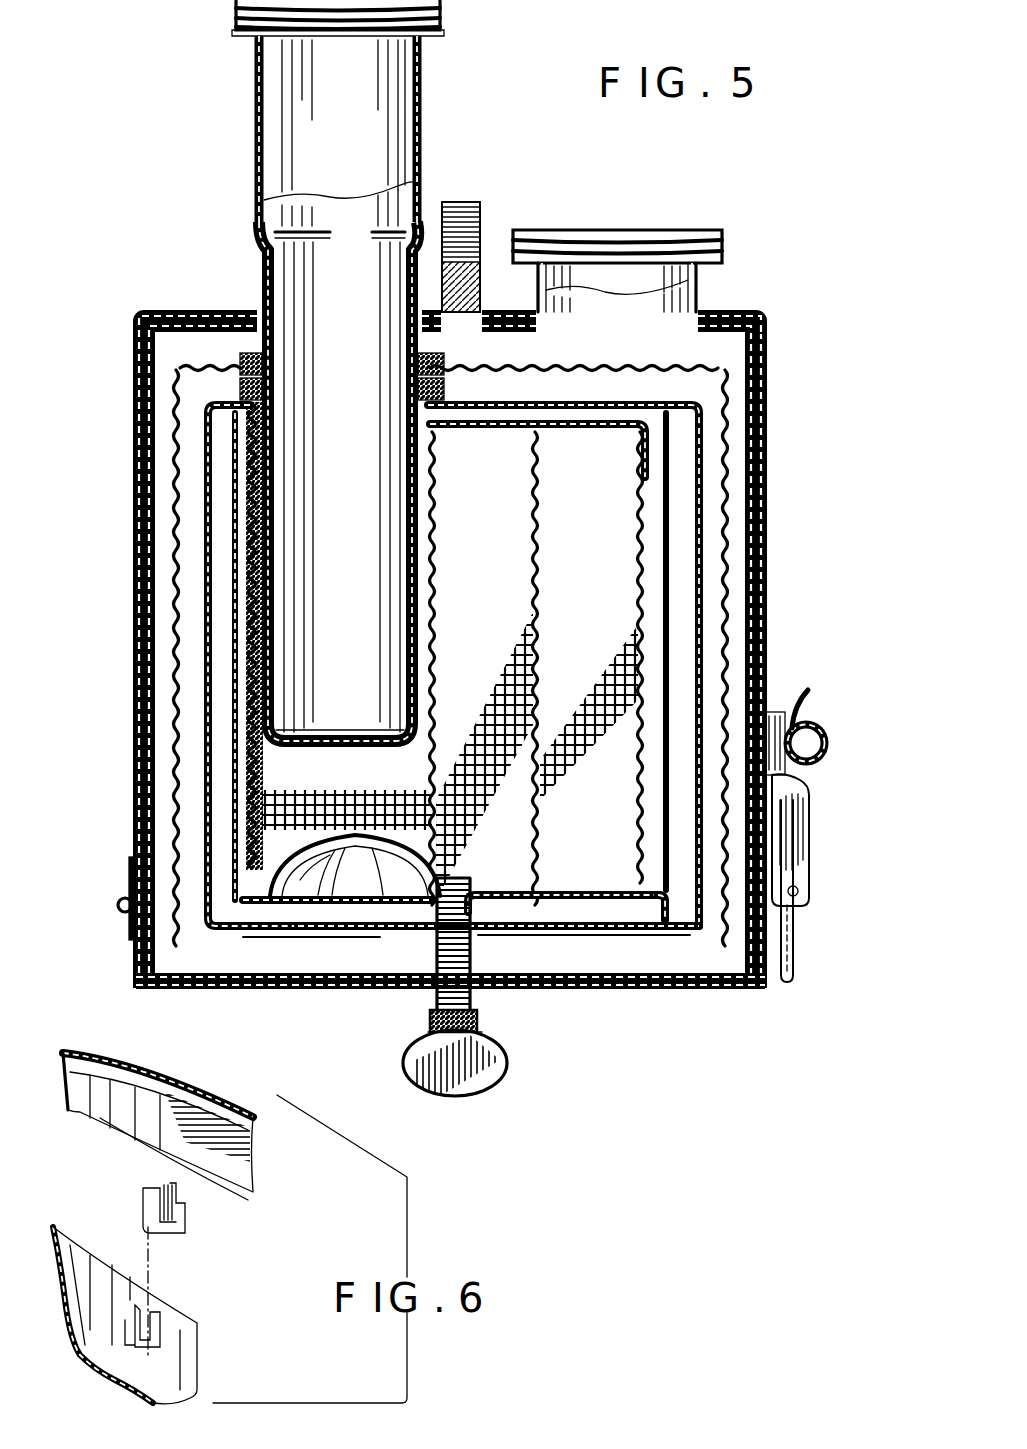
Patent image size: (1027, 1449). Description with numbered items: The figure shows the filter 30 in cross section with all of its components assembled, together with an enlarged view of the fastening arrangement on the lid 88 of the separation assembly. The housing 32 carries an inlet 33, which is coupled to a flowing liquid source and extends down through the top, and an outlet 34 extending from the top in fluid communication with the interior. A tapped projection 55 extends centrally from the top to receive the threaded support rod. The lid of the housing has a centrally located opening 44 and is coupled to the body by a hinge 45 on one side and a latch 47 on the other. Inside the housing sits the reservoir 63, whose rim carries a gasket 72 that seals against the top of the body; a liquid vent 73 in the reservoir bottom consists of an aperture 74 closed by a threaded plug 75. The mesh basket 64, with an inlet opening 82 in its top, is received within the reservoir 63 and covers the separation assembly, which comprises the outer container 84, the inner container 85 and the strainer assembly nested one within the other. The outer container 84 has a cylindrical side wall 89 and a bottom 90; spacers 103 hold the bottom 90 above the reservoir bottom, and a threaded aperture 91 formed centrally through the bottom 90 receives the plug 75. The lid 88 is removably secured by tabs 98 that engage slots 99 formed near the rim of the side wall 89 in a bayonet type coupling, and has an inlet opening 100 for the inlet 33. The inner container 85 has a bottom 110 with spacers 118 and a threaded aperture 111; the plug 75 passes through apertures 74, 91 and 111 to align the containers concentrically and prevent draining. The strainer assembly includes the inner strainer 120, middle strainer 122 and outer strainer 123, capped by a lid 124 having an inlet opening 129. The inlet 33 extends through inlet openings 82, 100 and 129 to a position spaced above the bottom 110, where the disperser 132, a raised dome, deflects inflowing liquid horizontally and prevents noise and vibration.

In FIG. 5, the filter 30 is at (818, 357).
In FIG. 5, the housing 32 is at (767, 598).
In FIG. 5, the inlet 33 is at (263, 262).
In FIG. 5, the outlet 34 is at (704, 270).
In FIG. 5, the opening 44 is at (402, 990).
In FIG. 5, the hinge 45 is at (118, 905).
In FIG. 5, the latch 47 is at (816, 842).
In FIG. 5, the projection 55 is at (481, 232).
In FIG. 5, the reservoir 63 is at (737, 395).
In FIG. 5, the basket 64 is at (492, 362).
In FIG. 5, the gasket 72 is at (740, 335).
In FIG. 5, the liquid vent 73 is at (428, 1036).
In FIG. 5, the aperture 74 is at (481, 1011).
In FIG. 5, the plug 75 is at (516, 1055).
In FIG. 5, the inlet opening 82 is at (244, 350).
In FIG. 5, the outer container 84 is at (692, 570).
In FIG. 5, the inner container 85 is at (658, 538).
In FIG. 5, the lid 88 is at (578, 406).
In FIG. 6, the lid 88 is at (215, 1091).
In FIG. 6, the side wall 89 is at (190, 1359).
In FIG. 5, the bottom 90 is at (569, 934).
In FIG. 5, the threaded aperture 91 is at (478, 932).
In FIG. 6, the tabs 98 is at (189, 1233).
In FIG. 6, the slots 99 is at (159, 1320).
In FIG. 5, the inlet opening 100 is at (243, 390).
In FIG. 5, the spacers 103 is at (696, 944).
In FIG. 5, the bottom 110 is at (508, 862).
In FIG. 5, the threaded aperture 111 is at (478, 905).
In FIG. 5, the spacers 118 is at (653, 902).
In FIG. 5, the inner strainer 120 is at (436, 600).
In FIG. 5, the middle strainer 122 is at (540, 450).
In FIG. 5, the outer strainer 123 is at (640, 500).
In FIG. 5, the lid 124 is at (486, 440).
In FIG. 5, the inlet opening 129 is at (262, 405).
In FIG. 5, the disperser 132 is at (365, 834).